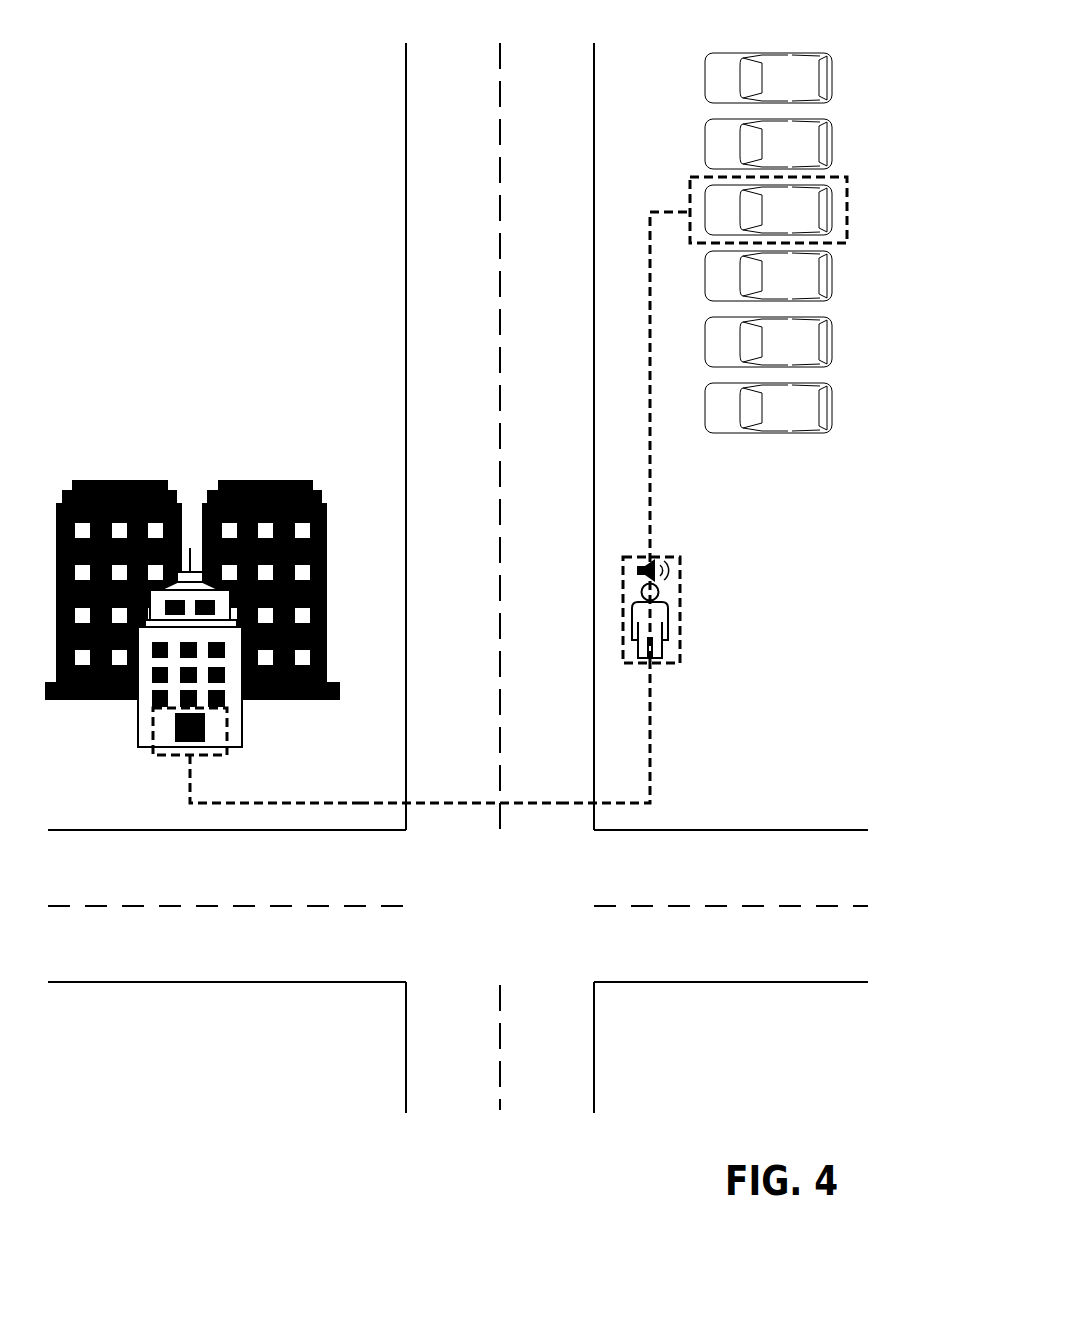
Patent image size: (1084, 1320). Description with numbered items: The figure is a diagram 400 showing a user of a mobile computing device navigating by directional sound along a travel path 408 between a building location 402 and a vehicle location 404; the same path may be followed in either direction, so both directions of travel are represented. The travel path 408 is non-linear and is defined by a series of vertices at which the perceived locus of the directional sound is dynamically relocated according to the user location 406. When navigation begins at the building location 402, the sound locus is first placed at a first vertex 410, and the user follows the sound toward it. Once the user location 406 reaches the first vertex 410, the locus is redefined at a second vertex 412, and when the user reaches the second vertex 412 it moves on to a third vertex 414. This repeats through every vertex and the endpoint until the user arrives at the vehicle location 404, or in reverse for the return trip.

The diagram 400 is at (204, 213).
The building location 402 is at (157, 757).
The vehicle location 404 is at (847, 186).
The user location 406 is at (680, 615).
The travel path 408 is at (363, 802).
The first vertex 410 is at (190, 803).
The second vertex 412 is at (650, 803).
The third vertex 414 is at (648, 212).